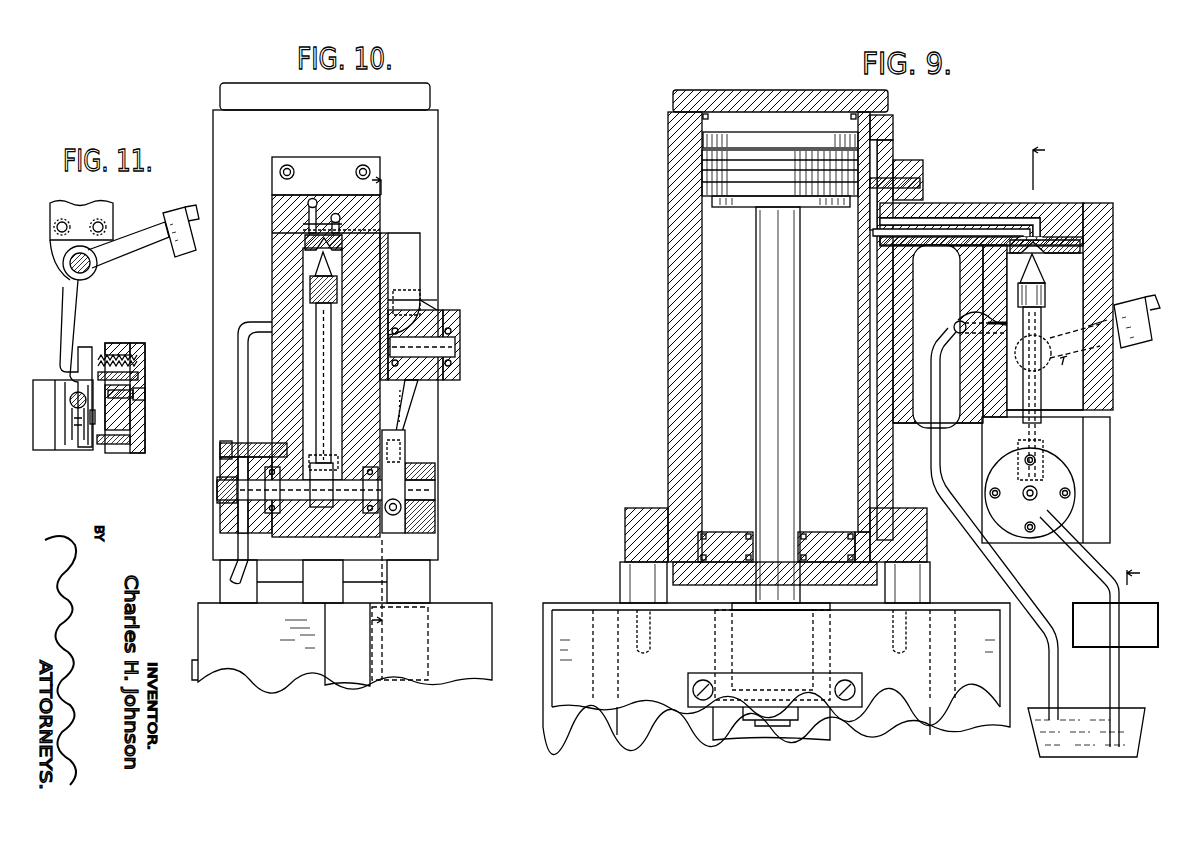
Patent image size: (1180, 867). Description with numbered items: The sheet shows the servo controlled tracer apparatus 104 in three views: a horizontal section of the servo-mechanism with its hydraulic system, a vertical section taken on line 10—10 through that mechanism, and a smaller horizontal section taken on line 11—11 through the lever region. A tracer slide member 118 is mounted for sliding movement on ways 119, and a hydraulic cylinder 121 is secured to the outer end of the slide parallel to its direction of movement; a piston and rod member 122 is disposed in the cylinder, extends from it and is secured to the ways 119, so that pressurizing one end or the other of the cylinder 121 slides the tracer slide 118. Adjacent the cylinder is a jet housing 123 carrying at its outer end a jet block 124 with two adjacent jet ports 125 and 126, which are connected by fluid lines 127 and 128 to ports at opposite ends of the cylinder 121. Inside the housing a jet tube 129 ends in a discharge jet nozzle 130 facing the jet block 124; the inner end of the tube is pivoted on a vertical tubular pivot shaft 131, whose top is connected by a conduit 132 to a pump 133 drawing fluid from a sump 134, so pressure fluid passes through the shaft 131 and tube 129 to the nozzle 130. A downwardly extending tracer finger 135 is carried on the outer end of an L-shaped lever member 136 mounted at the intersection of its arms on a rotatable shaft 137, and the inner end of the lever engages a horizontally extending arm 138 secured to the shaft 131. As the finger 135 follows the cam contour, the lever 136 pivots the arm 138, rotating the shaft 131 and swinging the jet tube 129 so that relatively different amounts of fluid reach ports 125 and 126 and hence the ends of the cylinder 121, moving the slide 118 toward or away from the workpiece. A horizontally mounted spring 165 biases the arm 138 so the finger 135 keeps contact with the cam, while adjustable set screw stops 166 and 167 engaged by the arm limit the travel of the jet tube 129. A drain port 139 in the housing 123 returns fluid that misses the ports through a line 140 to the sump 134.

In FIG. 9, the section line 10— 10 is at (1083, 364).
In FIG. 10, the section line 11— 11 is at (400, 418).
In FIG. 9, the servo controlled tracer apparatus 104 is at (905, 143).
In FIG. 10, the tracer slide member 118 is at (202, 612).
In FIG. 9, the tracer slide member 118 is at (583, 612).
In FIG. 10, the ways 119 is at (350, 682).
In FIG. 9, the ways 119 is at (572, 728).
In FIG. 10, the hydraulic cylinder 121 is at (437, 212).
In FIG. 9, the hydraulic cylinder 121 is at (668, 322).
In FIG. 10, the piston and rod member 122 is at (303, 598).
In FIG. 9, the piston and rod member 122 is at (756, 392).
In FIG. 10, the jet housing 123 is at (272, 283).
In FIG. 9, the jet housing 123 is at (1113, 270).
In FIG. 10, the jet block 124 is at (272, 244).
In FIG. 9, the jet block 124 is at (1113, 236).
In FIG. 10, the jet port 125 is at (376, 224).
In FIG. 9, the jet port 125 is at (1044, 254).
In FIG. 10, the jet port 126 is at (300, 224).
In FIG. 9, the jet port 126 is at (1045, 250).
In FIG. 10, the fluid line 127 is at (336, 213).
In FIG. 9, the fluid line 127 is at (995, 227).
In FIG. 10, the fluid line 128 is at (313, 198).
In FIG. 9, the fluid line 128 is at (858, 207).
In FIG. 10, the jet tube 129 is at (316, 385).
In FIG. 9, the jet tube 129 is at (1041, 322).
In FIG. 10, the discharge jet nozzle 130 is at (314, 262).
In FIG. 9, the discharge jet nozzle 130 is at (1042, 272).
In FIG. 11, the vertical tubular pivot shaft 131 is at (74, 396).
In FIG. 10, the vertical tubular pivot shaft 131 is at (326, 508).
In FIG. 9, the vertical tubular pivot shaft 131 is at (1024, 500).
In FIG. 10, the conduit 132 is at (248, 556).
In FIG. 9, the conduit 132 is at (1100, 560).
In FIG. 9, the pump 133 is at (1087, 603).
In FIG. 9, the sump 134 is at (1139, 735).
In FIG. 11, the tracer finger 135 is at (192, 252).
In FIG. 9, the tracer finger 135 is at (1142, 348).
In FIG. 11, the lever member 136 is at (142, 233).
In FIG. 10, the lever member 136 is at (405, 418).
In FIG. 9, the lever member 136 is at (1078, 352).
In FIG. 11, the rotatable shaft 137 is at (88, 268).
In FIG. 10, the rotatable shaft 137 is at (461, 347).
In FIG. 9, the rotatable shaft 137 is at (1015, 355).
In FIG. 11, the arm 138 is at (88, 347).
In FIG. 10, the arm 138 is at (406, 453).
In FIG. 10, the drain port 139 is at (312, 322).
In FIG. 9, the drain port 139 is at (985, 318).
In FIG. 10, the drain line 140 is at (236, 339).
In FIG. 9, the drain line 140 is at (938, 352).
In FIG. 11, the spring 165 is at (123, 343).
In FIG. 11, the adjustable set screw stop 166 is at (145, 377).
In FIG. 11, the adjustable set screw stop 167 is at (110, 447).